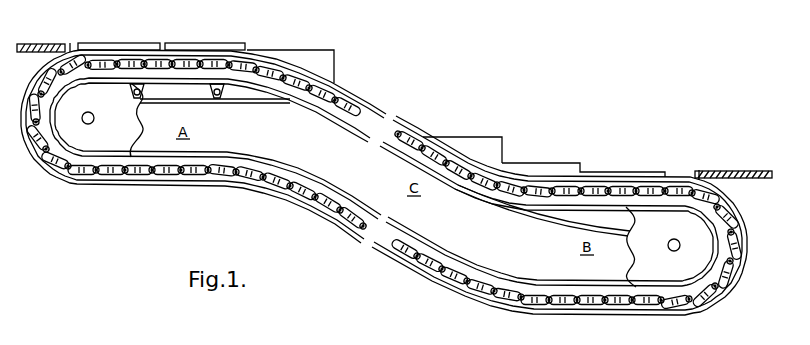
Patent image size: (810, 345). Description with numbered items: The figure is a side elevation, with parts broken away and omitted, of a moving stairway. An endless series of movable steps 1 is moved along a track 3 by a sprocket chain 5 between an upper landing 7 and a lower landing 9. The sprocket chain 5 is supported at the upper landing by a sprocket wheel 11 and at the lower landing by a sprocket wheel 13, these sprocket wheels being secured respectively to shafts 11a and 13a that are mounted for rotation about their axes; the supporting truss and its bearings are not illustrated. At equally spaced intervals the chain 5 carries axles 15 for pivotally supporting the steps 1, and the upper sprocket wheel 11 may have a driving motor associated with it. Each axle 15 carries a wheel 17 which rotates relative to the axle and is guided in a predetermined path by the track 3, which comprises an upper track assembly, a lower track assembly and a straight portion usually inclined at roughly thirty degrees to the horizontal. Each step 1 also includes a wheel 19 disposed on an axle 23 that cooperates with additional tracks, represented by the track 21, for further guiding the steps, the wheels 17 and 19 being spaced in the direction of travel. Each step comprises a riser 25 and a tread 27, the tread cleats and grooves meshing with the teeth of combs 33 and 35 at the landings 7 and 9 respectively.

The movable steps 1 is at (531, 160).
The track 3 is at (531, 221).
The sprocket chain 5 is at (211, 186).
The upper landing 7 is at (41, 44).
The lower landing 9 is at (733, 171).
The sprocket wheel 11 is at (143, 126).
The shaft 11a is at (92, 125).
The sprocket wheel 13 is at (626, 262).
The shaft 13a is at (672, 239).
The axles 15 is at (424, 136).
The wheel 17 is at (411, 152).
The wheel 19 is at (214, 96).
The track 21 is at (265, 105).
The axle 23 is at (226, 99).
The riser 25 is at (247, 50).
The tread 27 is at (205, 42).
The comb 33 is at (68, 47).
The comb 35 is at (699, 172).